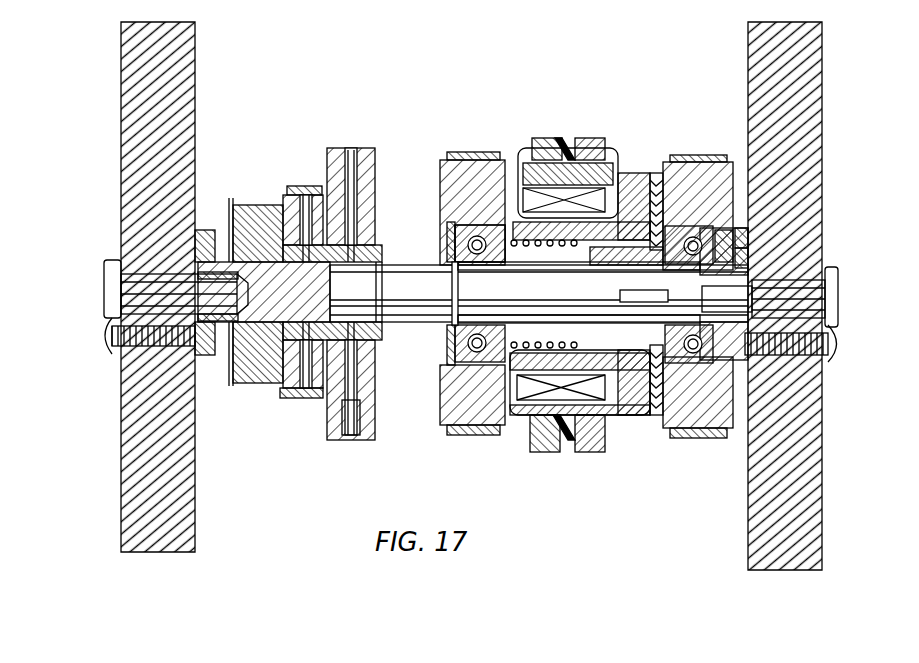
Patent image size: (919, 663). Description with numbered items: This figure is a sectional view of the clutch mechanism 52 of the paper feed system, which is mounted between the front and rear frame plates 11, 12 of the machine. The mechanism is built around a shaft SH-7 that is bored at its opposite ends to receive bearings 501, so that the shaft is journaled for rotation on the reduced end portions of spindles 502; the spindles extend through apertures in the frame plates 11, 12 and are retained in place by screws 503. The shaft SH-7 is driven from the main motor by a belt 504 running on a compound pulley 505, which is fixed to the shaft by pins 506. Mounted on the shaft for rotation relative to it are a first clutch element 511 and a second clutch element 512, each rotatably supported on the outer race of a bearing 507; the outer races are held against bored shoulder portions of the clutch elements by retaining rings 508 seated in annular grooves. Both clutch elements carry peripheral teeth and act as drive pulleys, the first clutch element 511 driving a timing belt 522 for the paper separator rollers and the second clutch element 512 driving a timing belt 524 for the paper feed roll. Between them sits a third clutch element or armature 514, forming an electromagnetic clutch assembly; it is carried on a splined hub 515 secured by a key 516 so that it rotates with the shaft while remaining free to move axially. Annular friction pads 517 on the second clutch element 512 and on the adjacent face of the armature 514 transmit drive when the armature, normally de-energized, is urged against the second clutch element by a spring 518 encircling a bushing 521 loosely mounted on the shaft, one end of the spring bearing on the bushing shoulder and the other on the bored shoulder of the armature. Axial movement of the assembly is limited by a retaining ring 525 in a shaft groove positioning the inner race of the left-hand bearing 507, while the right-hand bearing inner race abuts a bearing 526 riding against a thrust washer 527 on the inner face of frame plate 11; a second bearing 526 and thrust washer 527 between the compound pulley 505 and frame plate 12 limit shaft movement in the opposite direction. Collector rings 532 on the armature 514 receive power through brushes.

The front plate 11 is at (781, 570).
The rear plate 12 is at (158, 552).
The clutch mechanism 52 is at (535, 455).
The bearings 501 is at (260, 383).
The spindles 502 is at (108, 290).
The screws 503 is at (105, 338).
The belt 504 is at (305, 188).
The compound pulley 505 is at (300, 390).
The pins 506 is at (305, 300).
The bearings 507 is at (452, 358).
The retaining rings 508 is at (447, 240).
The first clutch element 511 is at (442, 165).
The second clutch element 512 is at (722, 162).
The armature 514 is at (635, 168).
The splined hub 515 is at (607, 330).
The key 516 is at (645, 292).
The annular friction pads 517 is at (655, 418).
The spring 518 is at (548, 270).
The bushing 521 is at (513, 325).
The timing belt 522 is at (455, 150).
The timing belt 524 is at (690, 160).
The retaining ring 525 is at (450, 262).
The bearing 526 is at (214, 348).
The thrust washer 527 is at (203, 232).
The collector rings 532 is at (590, 138).
The shaft SH-7 is at (452, 345).